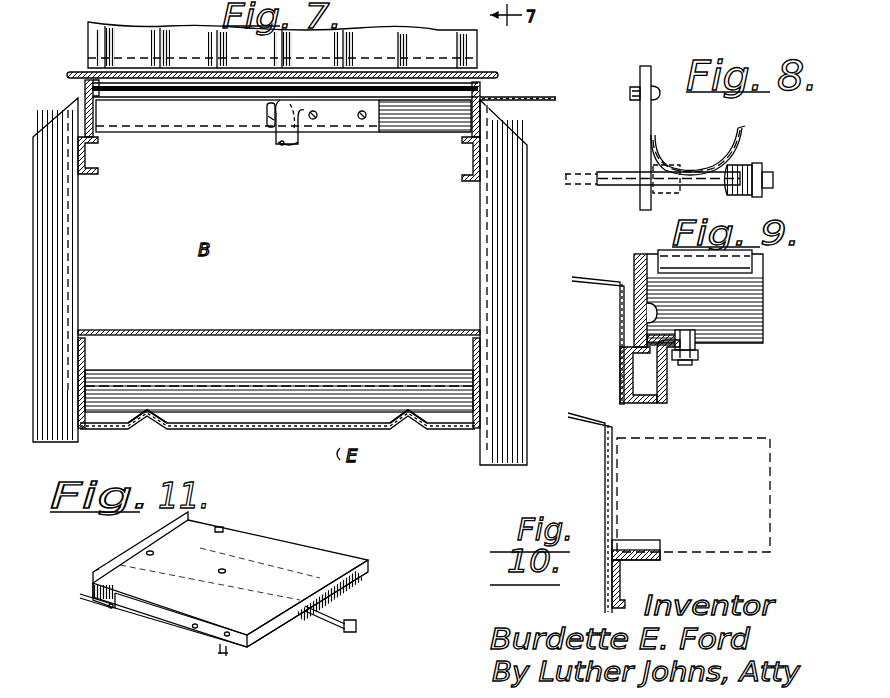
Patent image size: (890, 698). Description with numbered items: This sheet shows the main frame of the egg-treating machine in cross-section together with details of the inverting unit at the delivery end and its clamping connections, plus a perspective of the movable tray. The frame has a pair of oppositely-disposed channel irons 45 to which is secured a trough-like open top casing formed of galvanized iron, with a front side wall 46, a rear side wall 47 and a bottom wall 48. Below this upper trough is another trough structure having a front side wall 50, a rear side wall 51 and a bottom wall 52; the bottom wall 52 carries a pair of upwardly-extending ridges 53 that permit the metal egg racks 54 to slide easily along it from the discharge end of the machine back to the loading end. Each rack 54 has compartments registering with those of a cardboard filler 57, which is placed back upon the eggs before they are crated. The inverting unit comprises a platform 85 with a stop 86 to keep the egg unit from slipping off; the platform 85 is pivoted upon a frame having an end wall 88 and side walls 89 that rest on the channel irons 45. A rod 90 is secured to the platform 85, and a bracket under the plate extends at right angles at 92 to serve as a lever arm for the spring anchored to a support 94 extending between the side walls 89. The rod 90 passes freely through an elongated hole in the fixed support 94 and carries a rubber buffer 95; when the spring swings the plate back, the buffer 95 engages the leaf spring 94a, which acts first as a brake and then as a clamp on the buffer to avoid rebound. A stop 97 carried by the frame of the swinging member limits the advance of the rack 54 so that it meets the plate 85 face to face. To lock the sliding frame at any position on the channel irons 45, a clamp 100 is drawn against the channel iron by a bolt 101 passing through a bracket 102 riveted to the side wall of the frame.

In FIG. 7, the channel irons 45 is at (95, 172).
In FIG. 9, the channel irons 45 is at (630, 366).
In FIG. 10, the channel irons 45 is at (622, 580).
In FIG. 7, the front side wall 46 is at (80, 266).
In FIG. 7, the rear side wall 47 is at (480, 277).
In FIG. 9, the rear side wall 47 is at (620, 303).
In FIG. 10, the rear side wall 47 is at (605, 484).
In FIG. 7, the bottom wall 48 is at (264, 331).
In FIG. 7, the front side wall 50 is at (86, 364).
In FIG. 7, the rear side wall 51 is at (473, 358).
In FIG. 7, the bottom wall 52 is at (278, 428).
In FIG. 7, the ridges 53 is at (150, 427).
In FIG. 7, the egg rack 54 is at (244, 396).
In FIG. 10, the egg rack 54 is at (712, 438).
In FIG. 7, the filler 57 is at (434, 42).
In FIG. 7, the platform 85 is at (358, 72).
In FIG. 11, the platform 85 is at (230, 583).
In FIG. 11, the stop 86 is at (136, 552).
In FIG. 9, the end wall 88 is at (755, 300).
In FIG. 7, the side walls 89 is at (86, 95).
In FIG. 11, the side walls 89 is at (175, 618).
In FIG. 7, the rod 90 is at (268, 120).
In FIG. 8, the rod 90 is at (697, 185).
In FIG. 11, the rod 90 is at (330, 616).
In FIG. 7, the lever arm portion of bracket 92 is at (286, 146).
In FIG. 7, the support 94 is at (187, 114).
In FIG. 8, the support 94 is at (640, 143).
In FIG. 7, the leaf spring 94a is at (297, 137).
In FIG. 8, the leaf spring 94a is at (771, 132).
In FIG. 8, the buffer 95 is at (752, 168).
In FIG. 11, the buffer 95 is at (358, 621).
In FIG. 10, the stop 97 is at (644, 540).
In FIG. 11, the stop 97 is at (82, 594).
In FIG. 9, the clamp 100 is at (666, 382).
In FIG. 11, the clamp 100 is at (222, 650).
In FIG. 9, the bolt 101 is at (682, 333).
In FIG. 9, the bracket 102 is at (633, 331).